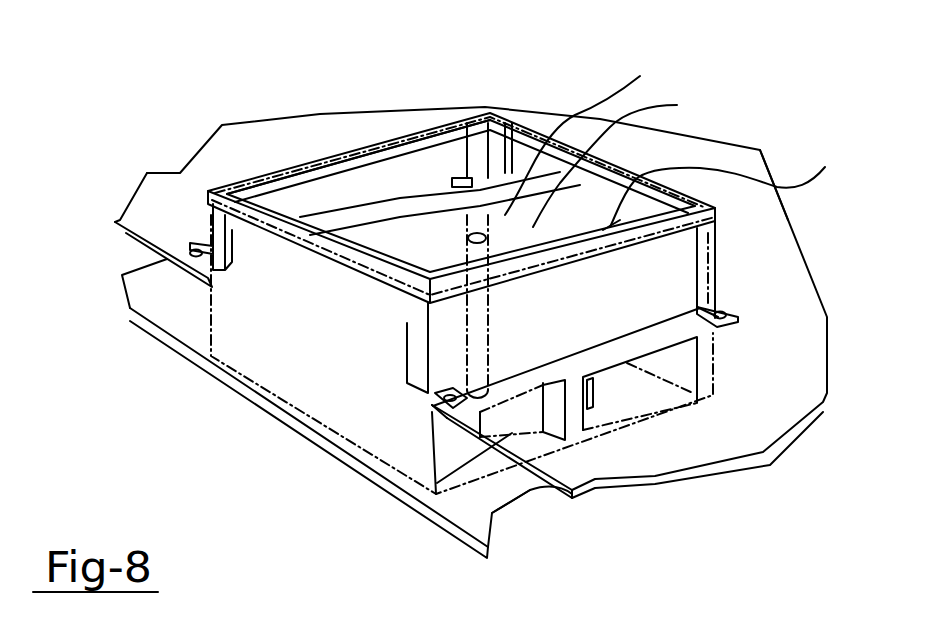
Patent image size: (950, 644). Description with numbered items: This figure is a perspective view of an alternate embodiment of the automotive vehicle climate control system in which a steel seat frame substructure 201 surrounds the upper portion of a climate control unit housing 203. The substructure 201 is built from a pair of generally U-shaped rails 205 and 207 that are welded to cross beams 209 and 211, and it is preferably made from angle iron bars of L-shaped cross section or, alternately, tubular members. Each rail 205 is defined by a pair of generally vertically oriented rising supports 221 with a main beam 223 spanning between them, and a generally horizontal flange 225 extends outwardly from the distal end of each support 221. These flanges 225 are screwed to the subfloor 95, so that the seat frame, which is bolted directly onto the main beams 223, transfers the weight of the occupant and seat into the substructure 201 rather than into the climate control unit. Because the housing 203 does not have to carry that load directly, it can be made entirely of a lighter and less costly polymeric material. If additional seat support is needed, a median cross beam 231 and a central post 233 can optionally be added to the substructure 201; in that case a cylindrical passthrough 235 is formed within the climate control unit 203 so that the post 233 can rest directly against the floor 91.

The seat frame substructure 201 is at (280, 142).
The climate control unit housing 203 is at (348, 349).
The rail 205 is at (298, 220).
The rail 207 is at (500, 130).
The cross beam 209 is at (397, 140).
The cross beam 211 is at (773, 233).
The support 221 is at (217, 248).
The main beam 223 is at (360, 262).
The flange 225 is at (197, 253).
The median cross beam 231 is at (596, 135).
The central post 233 is at (727, 182).
The cylindrical passthrough 235 is at (628, 160).
The floor 91 is at (457, 515).
The subfloor 95 is at (780, 312).